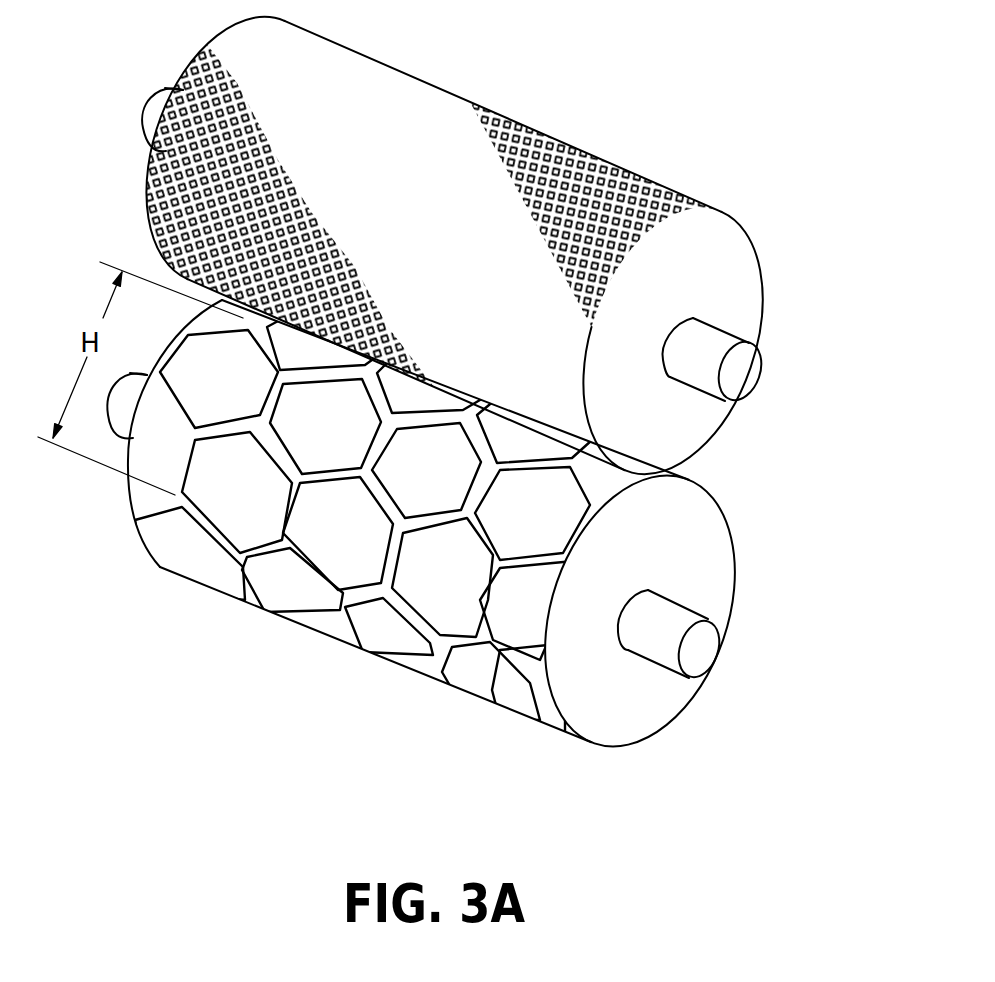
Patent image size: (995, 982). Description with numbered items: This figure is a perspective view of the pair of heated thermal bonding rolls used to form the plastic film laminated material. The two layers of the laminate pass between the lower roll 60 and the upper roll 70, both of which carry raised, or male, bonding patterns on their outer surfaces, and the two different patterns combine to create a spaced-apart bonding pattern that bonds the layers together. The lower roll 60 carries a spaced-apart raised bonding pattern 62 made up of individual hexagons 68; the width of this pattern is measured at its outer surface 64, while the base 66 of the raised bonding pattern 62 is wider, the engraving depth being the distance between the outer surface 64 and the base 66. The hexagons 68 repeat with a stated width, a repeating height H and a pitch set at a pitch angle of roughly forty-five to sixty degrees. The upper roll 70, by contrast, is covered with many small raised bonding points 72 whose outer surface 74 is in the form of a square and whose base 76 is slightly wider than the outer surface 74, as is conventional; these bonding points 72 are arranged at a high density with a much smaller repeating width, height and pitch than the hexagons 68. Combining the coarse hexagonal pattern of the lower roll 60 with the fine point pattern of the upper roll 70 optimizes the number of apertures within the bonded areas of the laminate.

The lower roll 60 is at (618, 745).
The raised bonding pattern 62 is at (317, 585).
The outer surface 64 is at (588, 535).
The base 66 is at (570, 632).
The hexagons 68 is at (255, 497).
The upper roll 70 is at (758, 279).
The raised bonding points 72 is at (557, 157).
The outer surface 74 is at (278, 156).
The base 76 is at (628, 258).